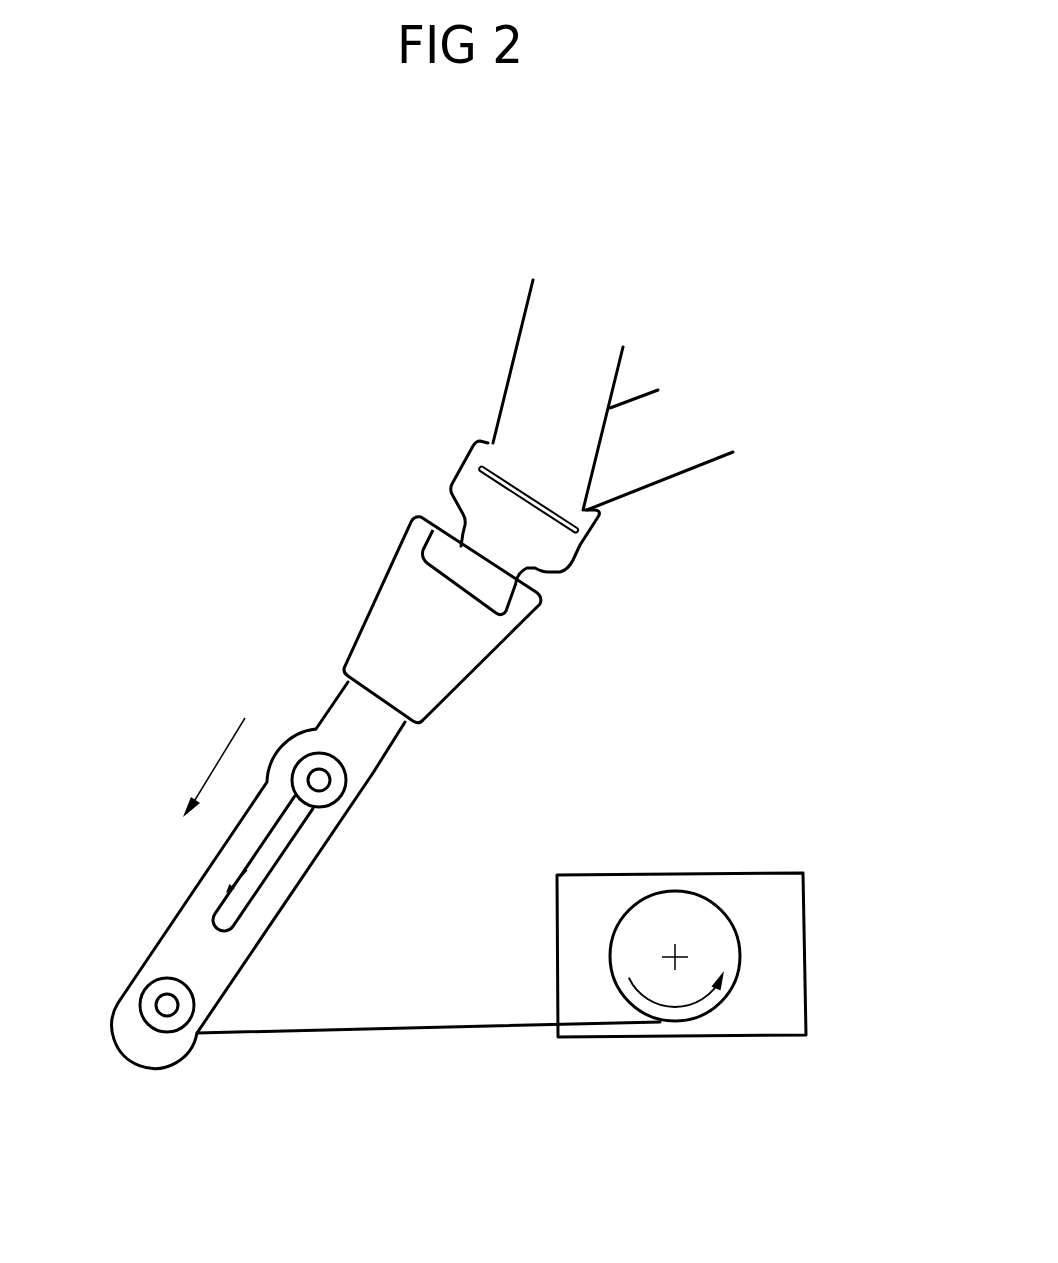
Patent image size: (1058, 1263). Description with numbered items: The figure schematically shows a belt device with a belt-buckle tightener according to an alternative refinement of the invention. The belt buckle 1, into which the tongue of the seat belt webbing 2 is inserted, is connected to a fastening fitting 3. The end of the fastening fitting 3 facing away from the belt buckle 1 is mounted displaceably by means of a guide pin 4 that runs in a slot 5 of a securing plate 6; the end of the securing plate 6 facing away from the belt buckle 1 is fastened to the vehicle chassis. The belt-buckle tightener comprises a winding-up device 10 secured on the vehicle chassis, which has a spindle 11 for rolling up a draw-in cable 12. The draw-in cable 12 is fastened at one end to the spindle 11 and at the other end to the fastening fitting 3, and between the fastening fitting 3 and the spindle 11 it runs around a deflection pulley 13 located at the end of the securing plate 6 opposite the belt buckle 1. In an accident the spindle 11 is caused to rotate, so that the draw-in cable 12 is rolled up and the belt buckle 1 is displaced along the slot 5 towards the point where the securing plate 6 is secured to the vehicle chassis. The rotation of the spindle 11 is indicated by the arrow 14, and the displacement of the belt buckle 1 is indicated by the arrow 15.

The belt buckle 1 is at (473, 680).
The seat belt webbing with tongue 2 is at (640, 462).
The fastening fitting 3 is at (388, 748).
The guide pin 4 is at (318, 769).
The slot 5 is at (277, 880).
The securing plate 6 is at (178, 900).
The winding-up device 10 is at (805, 922).
The spindle 11 is at (738, 980).
The draw-in cable 12 is at (365, 1028).
The deflection pulley 13 is at (147, 1028).
The arrow 14 is at (692, 1003).
The arrow 15 is at (223, 755).